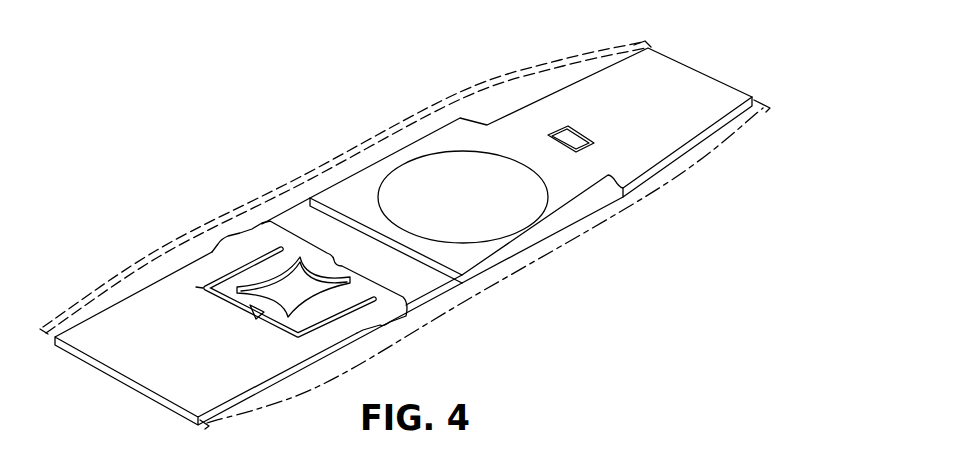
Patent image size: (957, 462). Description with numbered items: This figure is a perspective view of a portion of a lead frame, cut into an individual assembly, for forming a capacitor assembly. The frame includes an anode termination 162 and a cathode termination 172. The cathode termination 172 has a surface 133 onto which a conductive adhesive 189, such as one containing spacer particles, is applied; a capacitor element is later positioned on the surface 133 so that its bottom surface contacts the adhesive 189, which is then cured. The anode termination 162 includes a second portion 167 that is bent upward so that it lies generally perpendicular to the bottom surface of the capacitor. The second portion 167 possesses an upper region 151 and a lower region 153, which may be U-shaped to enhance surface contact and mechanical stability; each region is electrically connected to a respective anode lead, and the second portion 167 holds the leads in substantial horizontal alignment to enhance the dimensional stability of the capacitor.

The anode termination 162 is at (125, 328).
The cathode termination 172 is at (680, 77).
The surface 133 is at (580, 201).
The conductive adhesive 189 is at (470, 175).
The upper region 151 is at (339, 256).
The second portion 167 is at (274, 270).
The lower region 153 is at (250, 316).